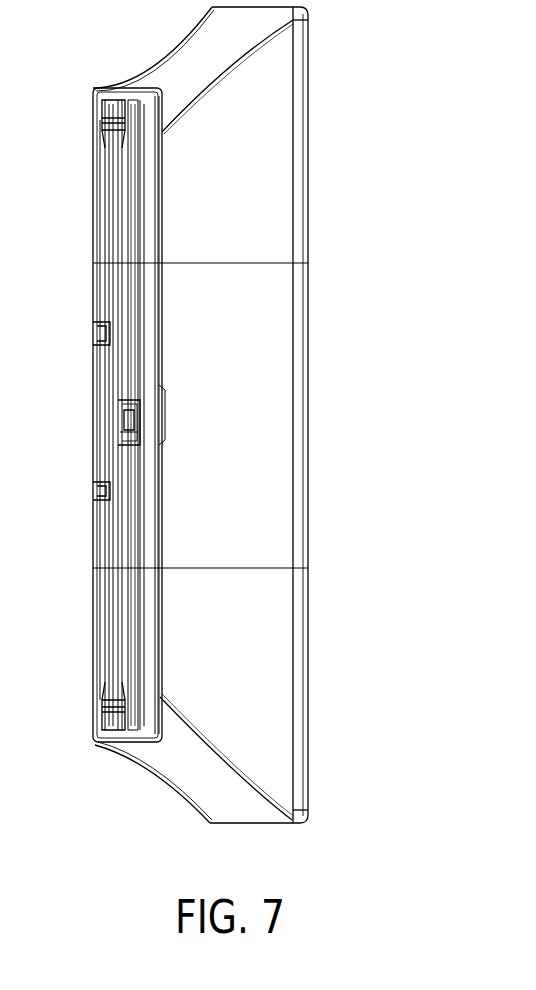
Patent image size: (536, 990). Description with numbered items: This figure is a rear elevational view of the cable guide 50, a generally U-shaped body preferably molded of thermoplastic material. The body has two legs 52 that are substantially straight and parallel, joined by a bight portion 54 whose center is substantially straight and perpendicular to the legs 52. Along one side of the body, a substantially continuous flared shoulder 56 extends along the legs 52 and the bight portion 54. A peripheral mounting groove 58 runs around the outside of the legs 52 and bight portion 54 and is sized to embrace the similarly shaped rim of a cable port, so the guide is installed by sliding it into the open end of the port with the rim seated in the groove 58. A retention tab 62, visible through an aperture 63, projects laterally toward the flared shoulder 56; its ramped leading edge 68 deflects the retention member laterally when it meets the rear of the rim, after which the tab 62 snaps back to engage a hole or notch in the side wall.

The cable guide 50 is at (396, 113).
The legs 52 is at (97, 140).
The bight portion 54 is at (100, 298).
The flared shoulder 56 is at (277, 428).
The peripheral mounting groove 58 is at (132, 108).
The retention tab 62 is at (128, 412).
The aperture 63 is at (128, 440).
The ramped leading edge 68 is at (128, 422).